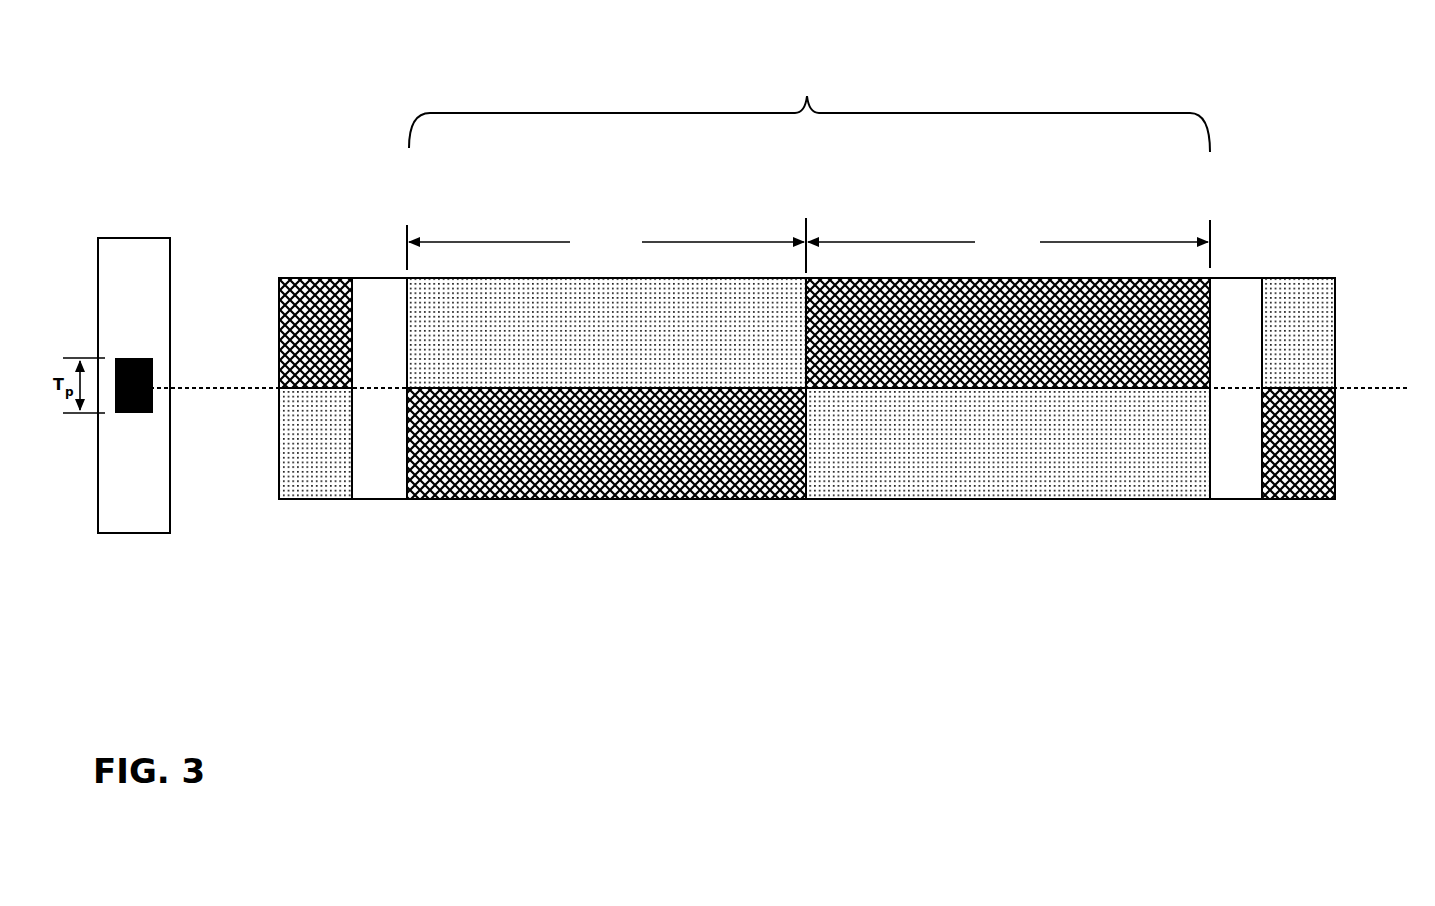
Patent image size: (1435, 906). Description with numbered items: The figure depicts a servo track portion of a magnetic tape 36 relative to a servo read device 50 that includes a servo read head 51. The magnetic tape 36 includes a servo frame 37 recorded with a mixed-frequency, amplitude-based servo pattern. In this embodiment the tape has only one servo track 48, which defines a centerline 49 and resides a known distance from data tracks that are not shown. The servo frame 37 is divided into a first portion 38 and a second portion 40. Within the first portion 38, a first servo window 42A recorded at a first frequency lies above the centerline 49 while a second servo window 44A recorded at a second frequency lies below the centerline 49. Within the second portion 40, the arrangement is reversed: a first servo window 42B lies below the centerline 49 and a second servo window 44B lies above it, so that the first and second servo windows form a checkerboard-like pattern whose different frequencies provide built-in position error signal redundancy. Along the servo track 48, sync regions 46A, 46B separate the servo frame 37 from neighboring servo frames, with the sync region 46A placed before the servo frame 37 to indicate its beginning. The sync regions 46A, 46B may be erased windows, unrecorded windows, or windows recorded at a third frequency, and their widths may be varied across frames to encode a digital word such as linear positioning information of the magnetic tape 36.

The magnetic tape 36 is at (316, 88).
The servo frame 37 is at (809, 107).
The first portion 38 is at (606, 245).
The second portion 40 is at (1009, 244).
The first servo window 42A is at (517, 317).
The first servo window 42B is at (972, 463).
The second servo window 44A is at (533, 460).
The second servo window 44B is at (950, 283).
The sync region 46A is at (370, 274).
The sync region 46B is at (1247, 274).
The servo track 48 is at (274, 388).
The centerline 49 is at (1353, 388).
The servo read device 50 is at (132, 515).
The servo read head 51 is at (135, 352).